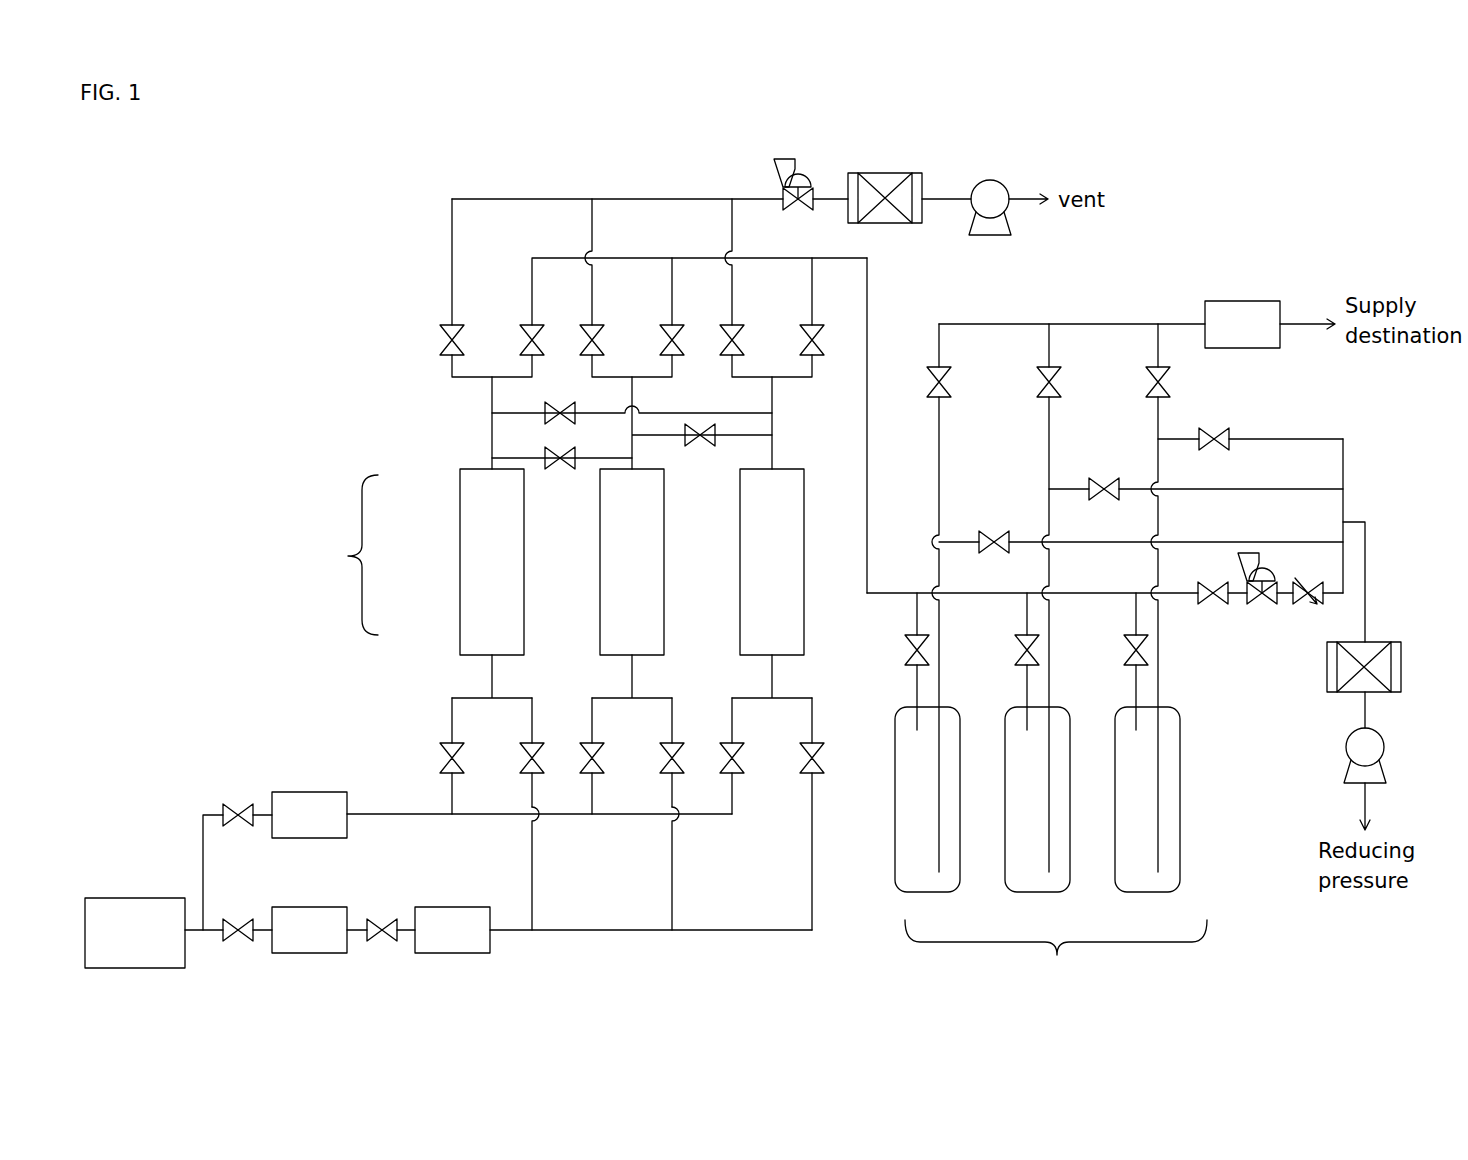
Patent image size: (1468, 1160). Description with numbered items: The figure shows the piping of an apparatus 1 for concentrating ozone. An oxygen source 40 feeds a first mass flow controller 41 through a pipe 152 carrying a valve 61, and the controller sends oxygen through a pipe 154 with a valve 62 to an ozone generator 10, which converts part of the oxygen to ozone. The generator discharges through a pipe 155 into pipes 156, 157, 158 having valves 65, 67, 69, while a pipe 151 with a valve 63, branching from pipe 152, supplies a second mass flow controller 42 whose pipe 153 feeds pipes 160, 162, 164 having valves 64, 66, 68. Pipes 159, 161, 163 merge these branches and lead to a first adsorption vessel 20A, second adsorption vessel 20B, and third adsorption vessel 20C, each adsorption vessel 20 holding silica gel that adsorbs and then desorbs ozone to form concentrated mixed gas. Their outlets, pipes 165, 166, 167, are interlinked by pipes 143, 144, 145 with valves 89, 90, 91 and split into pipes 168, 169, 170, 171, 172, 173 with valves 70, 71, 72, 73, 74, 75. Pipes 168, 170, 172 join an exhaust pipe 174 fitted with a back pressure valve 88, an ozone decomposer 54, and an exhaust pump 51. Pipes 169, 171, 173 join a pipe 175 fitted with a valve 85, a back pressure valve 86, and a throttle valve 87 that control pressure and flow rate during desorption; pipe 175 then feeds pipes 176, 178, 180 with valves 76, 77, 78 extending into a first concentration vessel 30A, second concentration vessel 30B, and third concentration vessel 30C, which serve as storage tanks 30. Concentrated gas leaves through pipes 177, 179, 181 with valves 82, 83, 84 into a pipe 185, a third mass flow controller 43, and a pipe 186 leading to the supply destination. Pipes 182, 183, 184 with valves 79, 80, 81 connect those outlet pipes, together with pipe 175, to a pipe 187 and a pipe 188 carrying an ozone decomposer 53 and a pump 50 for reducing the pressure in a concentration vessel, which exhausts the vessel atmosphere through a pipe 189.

The apparatus for concentrating ozone 1 is at (1348, 210).
The ozone generator 10 is at (453, 907).
The adsorption vessel 20 is at (552, 562).
The first adsorption vessel 20A is at (460, 530).
The second adsorption vessel 20B is at (600, 570).
The third adsorption vessel 20C is at (740, 557).
The storage tanks 30 is at (1051, 847).
The first concentration vessel 30A is at (907, 893).
The second concentration vessel 30B is at (1017, 893).
The third concentration vessel 30C is at (1127, 893).
The oxygen source 40 is at (135, 898).
The first mass flow controller 41 is at (313, 907).
The second mass flow controller 42 is at (287, 792).
The third mass flow controller 43 is at (1240, 301).
The pump for reducing the pressure in a concentration vessel 50 is at (1385, 746).
The exhaust pump 51 is at (991, 180).
The ozone decomposer 53 is at (1390, 642).
The ozone decomposer 54 is at (885, 173).
The valve 61 is at (233, 944).
The valve 62 is at (376, 944).
The valve 63 is at (235, 804).
The valve 64 is at (446, 758).
The valve 65 is at (526, 760).
The valve 66 is at (586, 758).
The valve 67 is at (666, 760).
The valve 68 is at (726, 758).
The valve 69 is at (806, 760).
The valve 70 is at (446, 341).
The valve 71 is at (526, 341).
The valve 72 is at (586, 341).
The valve 73 is at (666, 341).
The valve 74 is at (726, 341).
The valve 75 is at (806, 341).
The valve 76 is at (910, 651).
The valve 77 is at (1020, 651).
The valve 78 is at (1129, 651).
The valve 79 is at (990, 531).
The valve 80 is at (1100, 478).
The valve 81 is at (1224, 433).
The valve 82 is at (952, 381).
The valve 83 is at (1062, 381).
The valve 84 is at (1171, 381).
The valve 85 is at (1208, 606).
The back pressure valve 86 is at (1258, 606).
The throttle valve 87 is at (1304, 606).
The back pressure valve 88 is at (808, 186).
The valve 89 is at (560, 469).
The valve 90 is at (700, 446).
The valve 91 is at (558, 403).
The pipe 143 is at (505, 458).
The pipe 144 is at (648, 435).
The pipe 145 is at (745, 403).
The pipe 151 is at (203, 830).
The pipe 152 is at (262, 933).
The pipe 153 is at (372, 814).
The pipe 154 is at (406, 935).
The pipe 155 is at (560, 932).
The pipe 156 is at (532, 871).
The pipe 157 is at (672, 871).
The pipe 158 is at (812, 871).
The pipe 159 is at (517, 690).
The pipe 160 is at (458, 814).
The pipe 161 is at (657, 690).
The pipe 162 is at (598, 814).
The pipe 163 is at (797, 690).
The pipe 164 is at (738, 814).
The pipe 165 is at (492, 430).
The pipe 166 is at (632, 395).
The pipe 167 is at (772, 444).
The pipe 168 is at (452, 237).
The pipe 169 is at (532, 280).
The pipe 170 is at (592, 238).
The pipe 171 is at (672, 281).
The pipe 172 is at (732, 238).
The pipe 173 is at (812, 281).
The pipe 174 is at (510, 199).
The pipe 175 is at (867, 281).
The pipe 176 is at (917, 689).
The pipe 177 is at (939, 652).
The pipe 178 is at (1027, 689).
The pipe 179 is at (1049, 652).
The pipe 180 is at (1136, 689).
The pipe 181 is at (1158, 673).
The pipe 182 is at (1080, 542).
The pipe 183 is at (1200, 489).
The pipe 184 is at (1300, 439).
The pipe 185 is at (1005, 324).
The pipe 186 is at (1300, 326).
The pipe 187 is at (1343, 446).
The pipe 188 is at (1365, 552).
The pipe 189 is at (1367, 800).